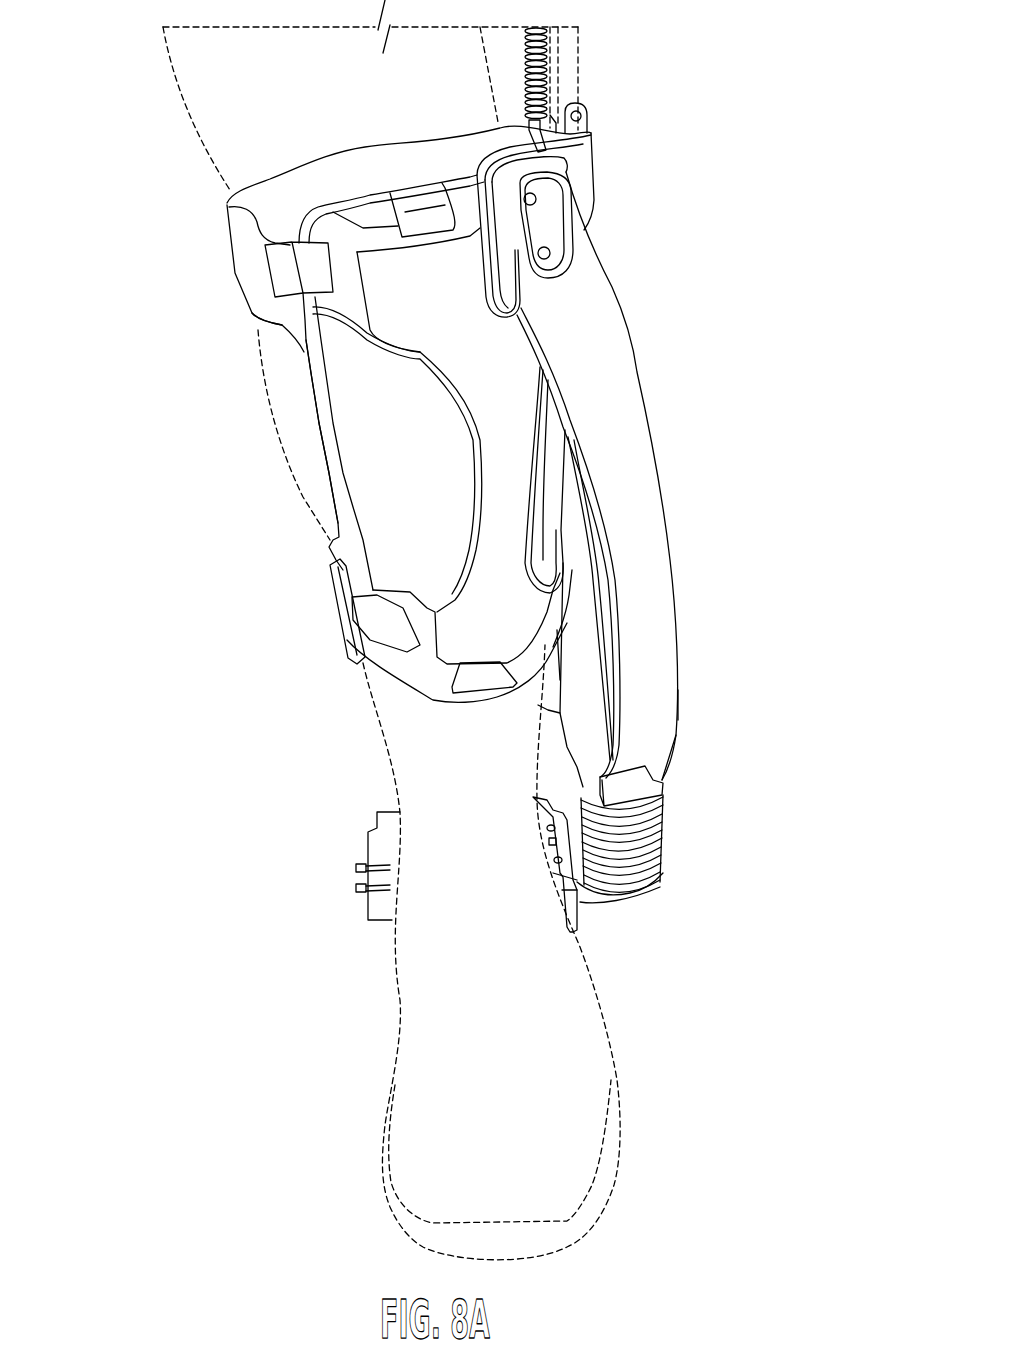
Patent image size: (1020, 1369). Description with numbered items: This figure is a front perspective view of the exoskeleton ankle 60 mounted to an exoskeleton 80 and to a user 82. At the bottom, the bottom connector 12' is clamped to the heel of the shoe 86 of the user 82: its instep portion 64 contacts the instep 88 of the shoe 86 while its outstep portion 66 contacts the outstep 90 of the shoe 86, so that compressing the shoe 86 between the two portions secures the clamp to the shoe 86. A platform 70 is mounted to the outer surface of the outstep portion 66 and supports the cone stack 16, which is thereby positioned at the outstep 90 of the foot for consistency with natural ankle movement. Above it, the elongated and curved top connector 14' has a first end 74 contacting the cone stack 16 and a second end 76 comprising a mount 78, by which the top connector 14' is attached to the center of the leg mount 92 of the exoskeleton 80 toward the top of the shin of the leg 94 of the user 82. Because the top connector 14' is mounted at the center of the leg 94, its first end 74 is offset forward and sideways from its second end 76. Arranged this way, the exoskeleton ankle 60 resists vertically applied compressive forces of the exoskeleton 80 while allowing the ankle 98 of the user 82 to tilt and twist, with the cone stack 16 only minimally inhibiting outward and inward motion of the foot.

The bottom connector 12' is at (695, 877).
The top connector 14' is at (606, 456).
The cone stack 16 is at (662, 818).
The exoskeleton ankle 60 is at (677, 707).
The instep portion 64 is at (363, 852).
The outstep portion 66 is at (577, 918).
The platform 70 is at (647, 887).
The first end 74 is at (652, 782).
The second end 76 is at (532, 183).
The mount 78 is at (542, 228).
The exoskeleton 80 is at (341, 373).
The user 82 is at (188, 107).
The shoe 86 is at (578, 1103).
The instep 88 is at (410, 1010).
The outstep 90 is at (583, 1017).
The leg mount 92 is at (255, 326).
The leg 94 is at (313, 452).
The ankle 98 is at (540, 717).